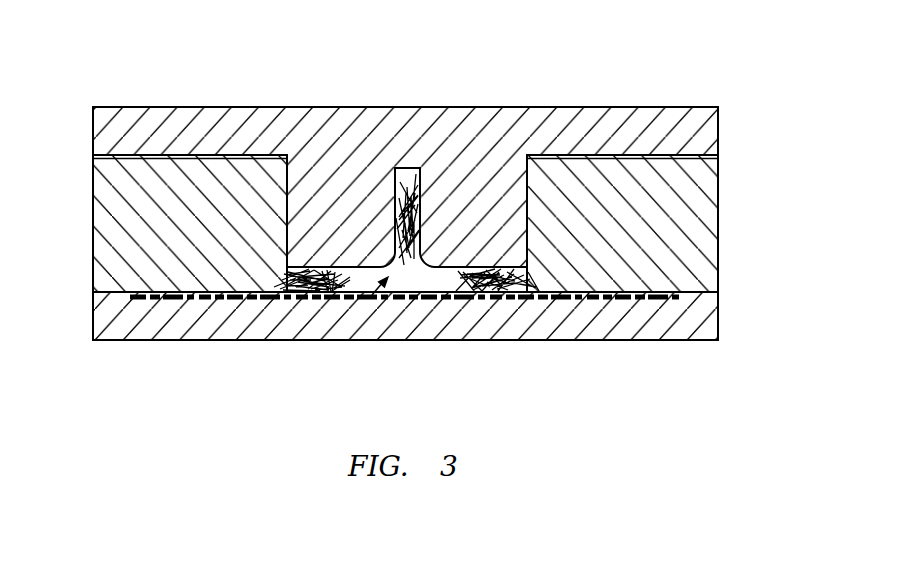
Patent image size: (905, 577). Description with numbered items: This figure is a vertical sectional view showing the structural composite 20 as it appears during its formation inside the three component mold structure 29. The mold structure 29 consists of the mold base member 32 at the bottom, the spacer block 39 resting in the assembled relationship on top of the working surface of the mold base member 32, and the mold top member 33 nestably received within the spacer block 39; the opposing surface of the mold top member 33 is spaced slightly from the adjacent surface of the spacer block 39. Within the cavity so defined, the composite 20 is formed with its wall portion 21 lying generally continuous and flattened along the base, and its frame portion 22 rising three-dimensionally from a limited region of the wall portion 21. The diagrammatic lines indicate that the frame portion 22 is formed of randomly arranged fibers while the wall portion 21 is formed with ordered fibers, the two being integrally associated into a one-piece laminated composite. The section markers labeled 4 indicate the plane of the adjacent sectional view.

The structural composite 20 is at (317, 340).
The wall portion 21 is at (192, 303).
The frame portion 22 is at (411, 168).
The three component mold structure 29 is at (164, 86).
The mold base member 32 is at (639, 342).
The mold top member 33 is at (648, 107).
The spacer block 39 is at (93, 218).
The section line of FIG. 4 is at (406, 85).